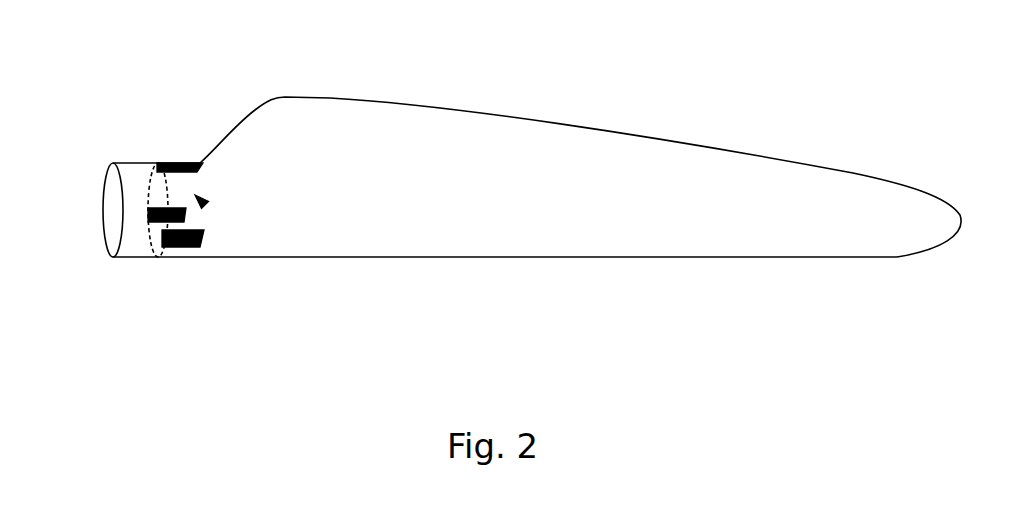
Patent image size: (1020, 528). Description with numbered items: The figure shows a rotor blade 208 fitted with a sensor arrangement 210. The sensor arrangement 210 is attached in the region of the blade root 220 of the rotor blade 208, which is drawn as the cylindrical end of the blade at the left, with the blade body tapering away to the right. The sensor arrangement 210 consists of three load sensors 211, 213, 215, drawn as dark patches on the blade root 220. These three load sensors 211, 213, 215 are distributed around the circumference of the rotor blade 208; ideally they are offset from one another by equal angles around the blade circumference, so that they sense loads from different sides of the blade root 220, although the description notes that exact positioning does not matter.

The rotor blade 208 is at (528, 160).
The sensor arrangement 210 is at (159, 255).
The load sensor 211 is at (148, 213).
The load sensor 213 is at (180, 161).
The load sensor 215 is at (190, 248).
The blade root 220 is at (205, 205).